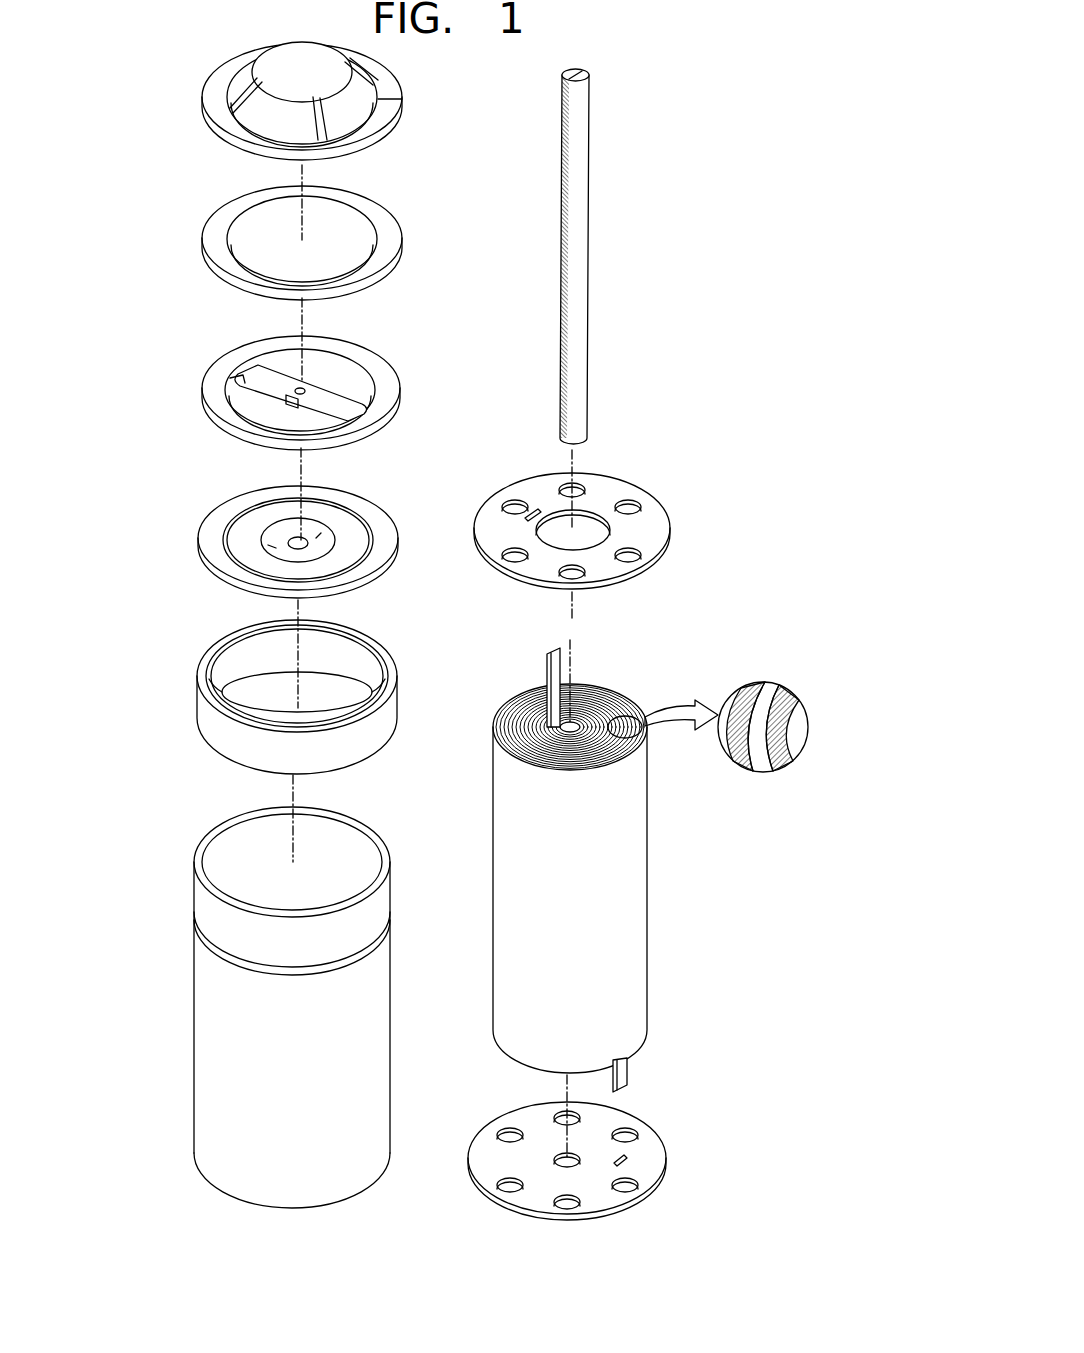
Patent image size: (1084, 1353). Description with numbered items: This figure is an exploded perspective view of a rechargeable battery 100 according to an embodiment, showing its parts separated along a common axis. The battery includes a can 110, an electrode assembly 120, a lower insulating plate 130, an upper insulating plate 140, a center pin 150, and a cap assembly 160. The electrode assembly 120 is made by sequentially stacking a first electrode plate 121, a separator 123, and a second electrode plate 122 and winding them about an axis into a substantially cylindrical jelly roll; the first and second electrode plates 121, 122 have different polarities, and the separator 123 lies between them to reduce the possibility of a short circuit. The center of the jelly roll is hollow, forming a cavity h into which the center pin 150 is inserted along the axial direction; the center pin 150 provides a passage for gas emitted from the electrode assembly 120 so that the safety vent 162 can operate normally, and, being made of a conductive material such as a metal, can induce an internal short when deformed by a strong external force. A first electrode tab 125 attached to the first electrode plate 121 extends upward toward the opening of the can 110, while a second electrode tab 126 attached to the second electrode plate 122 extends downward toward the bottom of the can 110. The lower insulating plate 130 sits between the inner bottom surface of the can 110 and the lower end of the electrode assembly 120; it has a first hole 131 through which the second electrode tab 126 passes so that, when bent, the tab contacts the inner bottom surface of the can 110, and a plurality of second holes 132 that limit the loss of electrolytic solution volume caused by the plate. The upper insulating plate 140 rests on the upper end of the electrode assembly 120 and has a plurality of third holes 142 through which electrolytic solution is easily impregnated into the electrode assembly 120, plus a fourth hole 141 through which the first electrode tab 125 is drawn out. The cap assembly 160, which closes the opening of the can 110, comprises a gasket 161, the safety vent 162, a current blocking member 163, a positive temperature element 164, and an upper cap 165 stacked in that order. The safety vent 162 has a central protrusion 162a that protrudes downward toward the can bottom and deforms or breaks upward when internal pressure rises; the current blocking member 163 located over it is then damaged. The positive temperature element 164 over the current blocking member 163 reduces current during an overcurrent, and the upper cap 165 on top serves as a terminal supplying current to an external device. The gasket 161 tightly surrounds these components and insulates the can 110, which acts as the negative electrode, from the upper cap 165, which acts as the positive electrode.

The secondary battery 100 is at (737, 37).
The can 110 is at (200, 1038).
The electrode assembly 120 is at (648, 900).
The first electrode plate 121 is at (725, 756).
The second electrode plate 122 is at (786, 757).
The separator 123 is at (753, 756).
The first electrode tab 125 is at (545, 668).
The second electrode tab 126 is at (630, 1072).
The lower insulating plate 130 is at (657, 1158).
The first hole 131 is at (627, 1165).
The second holes 132 is at (625, 1187).
The upper insulating plate 140 is at (655, 532).
The fourth hole 141 is at (530, 511).
The third holes 142 is at (630, 505).
The center pin 150 is at (578, 243).
The cap assembly 160 is at (121, 100).
The gasket 161 is at (200, 710).
The safety vent 162 is at (200, 540).
The central protrusion 162a is at (332, 533).
The current blocking member 163 is at (203, 391).
The positive temperature element 164 is at (203, 240).
The upper cap 165 is at (203, 100).
The cavity h is at (607, 700).